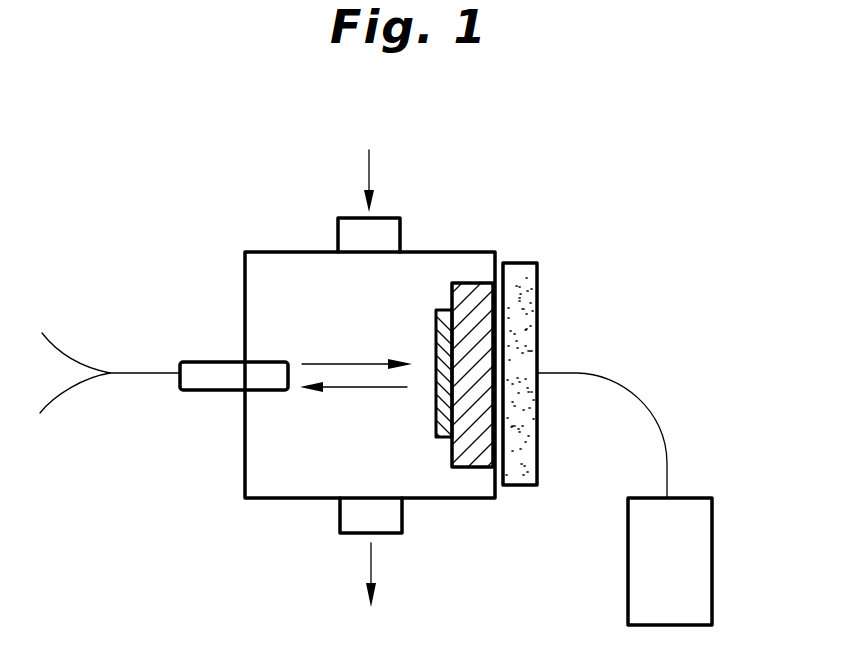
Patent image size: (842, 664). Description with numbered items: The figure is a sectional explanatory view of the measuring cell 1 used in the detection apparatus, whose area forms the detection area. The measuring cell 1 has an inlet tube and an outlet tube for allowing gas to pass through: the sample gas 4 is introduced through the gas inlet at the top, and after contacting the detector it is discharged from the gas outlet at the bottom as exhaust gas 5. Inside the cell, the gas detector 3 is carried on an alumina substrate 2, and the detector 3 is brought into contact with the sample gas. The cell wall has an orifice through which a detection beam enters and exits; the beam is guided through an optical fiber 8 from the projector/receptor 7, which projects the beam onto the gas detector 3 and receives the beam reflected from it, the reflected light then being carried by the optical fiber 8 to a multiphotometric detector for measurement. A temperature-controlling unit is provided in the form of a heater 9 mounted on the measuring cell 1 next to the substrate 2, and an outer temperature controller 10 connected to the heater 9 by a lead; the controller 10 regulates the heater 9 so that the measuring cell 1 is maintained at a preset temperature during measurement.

The measuring cell 1 is at (265, 243).
The substrate 2 is at (480, 468).
The detector 3 is at (434, 311).
The sample gas 4 is at (368, 165).
The exhaust gas 5 is at (371, 570).
The projector/receptor 7 is at (197, 362).
The optical fiber 8 is at (75, 384).
The heater 9 is at (537, 275).
The outer temperature controller 10 is at (712, 535).